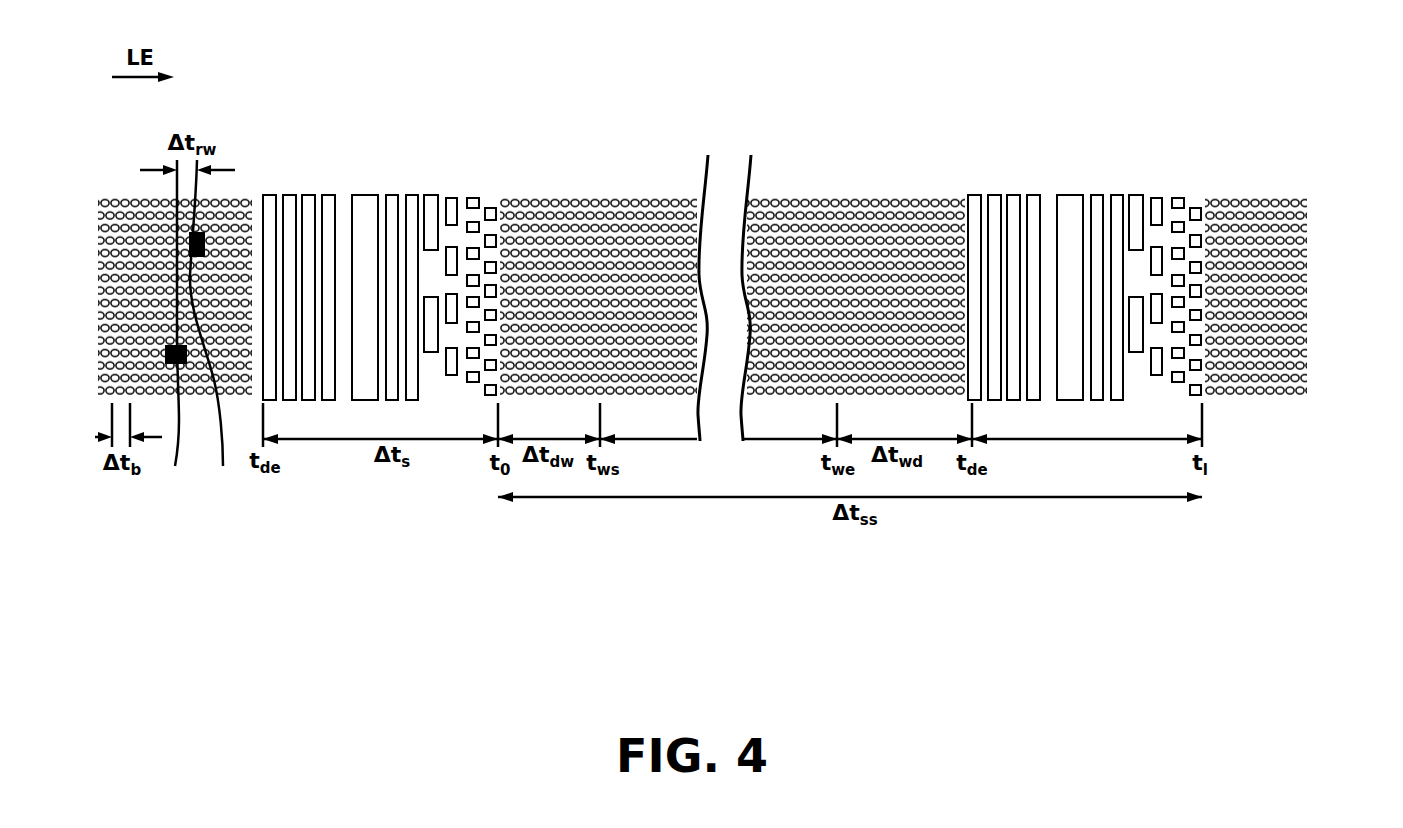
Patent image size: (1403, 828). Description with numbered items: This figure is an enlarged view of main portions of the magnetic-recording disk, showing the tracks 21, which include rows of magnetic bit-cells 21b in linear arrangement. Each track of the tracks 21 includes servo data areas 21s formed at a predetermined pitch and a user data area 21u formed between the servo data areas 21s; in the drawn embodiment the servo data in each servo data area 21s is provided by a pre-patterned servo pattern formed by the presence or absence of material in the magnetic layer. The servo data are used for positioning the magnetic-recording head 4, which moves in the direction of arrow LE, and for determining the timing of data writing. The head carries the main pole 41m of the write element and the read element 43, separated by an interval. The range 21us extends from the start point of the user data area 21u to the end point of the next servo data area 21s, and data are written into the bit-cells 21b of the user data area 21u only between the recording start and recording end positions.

The magnetic-recording head 4 is at (195, 351).
The main pole 41m is at (168, 328).
The read element 43 is at (212, 327).
The tracks 21 is at (1332, 209).
The magnetic bit-cells 21b is at (1294, 200).
The servo data areas 21s is at (260, 135).
The user data area 21u is at (503, 135).
The range 21us is at (1205, 80).